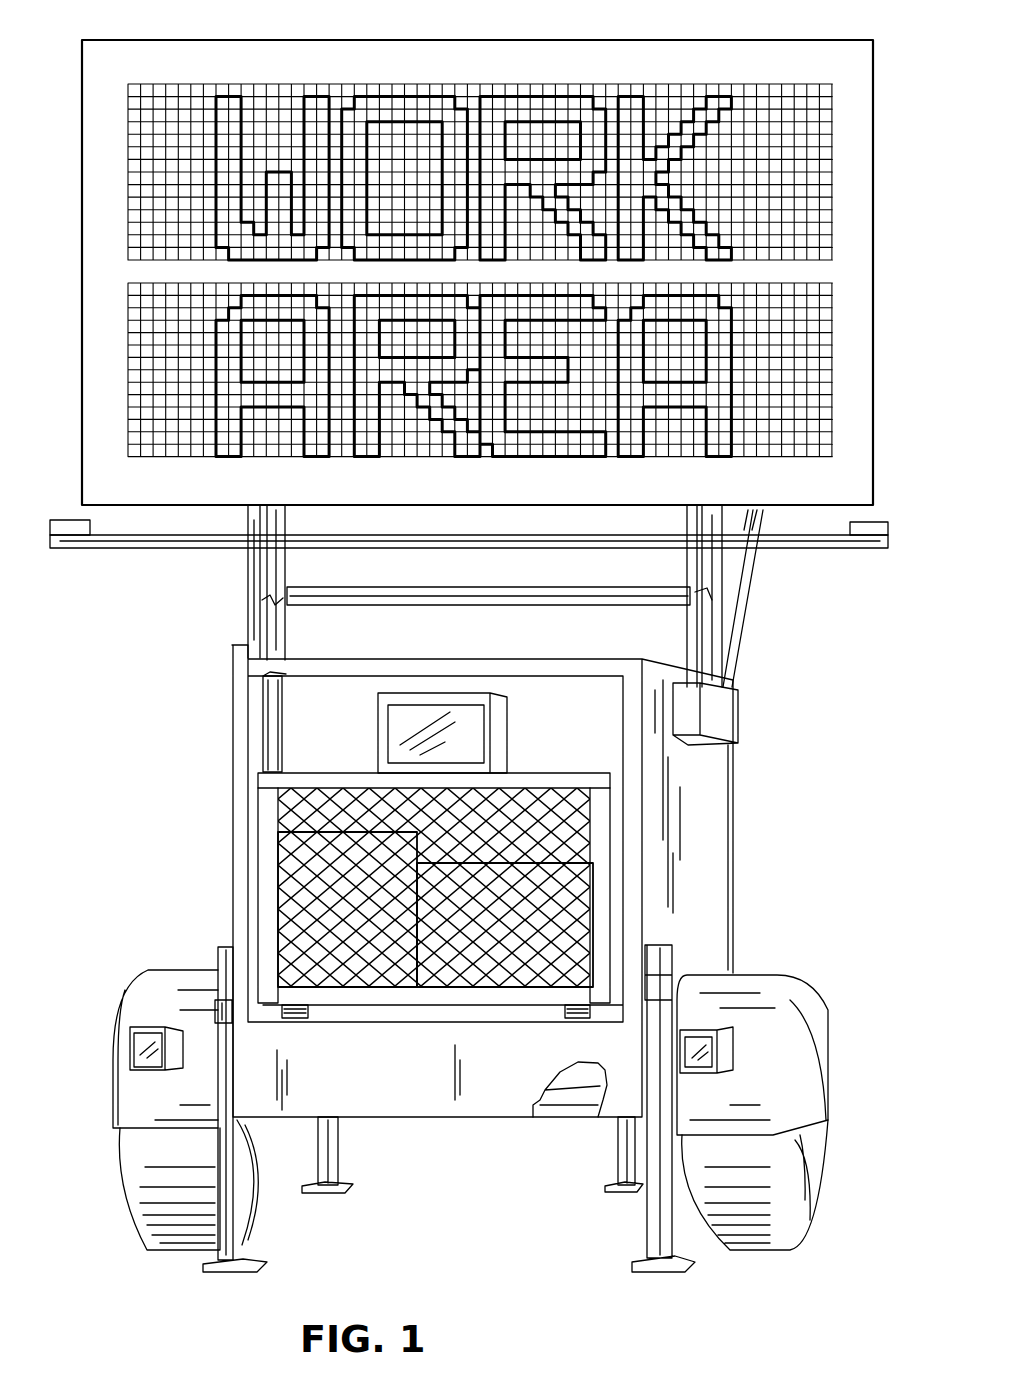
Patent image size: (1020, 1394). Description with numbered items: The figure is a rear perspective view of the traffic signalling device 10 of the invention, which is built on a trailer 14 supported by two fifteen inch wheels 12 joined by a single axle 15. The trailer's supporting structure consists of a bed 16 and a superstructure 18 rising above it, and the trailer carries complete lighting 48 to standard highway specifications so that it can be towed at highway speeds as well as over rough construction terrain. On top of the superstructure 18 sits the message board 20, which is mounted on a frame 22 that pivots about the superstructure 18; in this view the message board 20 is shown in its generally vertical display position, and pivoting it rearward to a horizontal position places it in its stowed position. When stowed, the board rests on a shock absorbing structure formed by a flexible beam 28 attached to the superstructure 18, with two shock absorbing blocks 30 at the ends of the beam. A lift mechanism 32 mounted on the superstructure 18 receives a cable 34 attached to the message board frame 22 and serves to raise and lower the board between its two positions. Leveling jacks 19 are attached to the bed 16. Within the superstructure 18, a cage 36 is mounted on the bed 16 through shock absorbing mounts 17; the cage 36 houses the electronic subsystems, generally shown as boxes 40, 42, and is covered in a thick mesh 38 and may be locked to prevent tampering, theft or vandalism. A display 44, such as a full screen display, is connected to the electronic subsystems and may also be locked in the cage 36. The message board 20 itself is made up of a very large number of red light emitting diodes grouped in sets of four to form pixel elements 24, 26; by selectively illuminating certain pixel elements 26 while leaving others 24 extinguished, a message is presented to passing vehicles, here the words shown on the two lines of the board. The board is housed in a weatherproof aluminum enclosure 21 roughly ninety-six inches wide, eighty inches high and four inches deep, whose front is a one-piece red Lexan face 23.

The traffic signalling device 10 is at (156, 767).
The wheels 12 is at (143, 1161).
The trailer 14 is at (755, 892).
The axle 15 is at (585, 1097).
The bed 16 is at (446, 1118).
The shock absorbing mounts 17 is at (316, 1010).
The superstructure 18 is at (690, 802).
The leveling jacks 19 is at (335, 1158).
The message board 20 is at (771, 36).
The weatherproof aluminum enclosure 21 is at (82, 267).
The frame 22 is at (717, 580).
The red Lexan face 23 is at (95, 178).
The pixel elements 24 is at (192, 440).
The pixel elements 26 is at (240, 440).
The flexible beam 28 is at (190, 548).
The shock absorbing blocks 30 is at (66, 520).
The lift mechanism 32 is at (718, 716).
The cable 34 is at (733, 655).
The cage 36 is at (270, 846).
The mesh 38 is at (275, 795).
The box 40 is at (365, 926).
The box 42 is at (525, 931).
The display 44 is at (470, 721).
The lighting 48 is at (133, 1035).